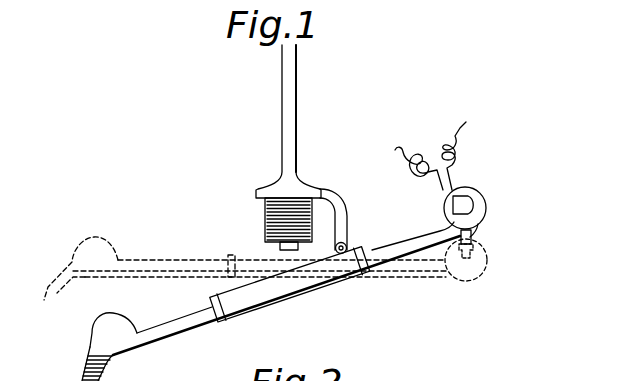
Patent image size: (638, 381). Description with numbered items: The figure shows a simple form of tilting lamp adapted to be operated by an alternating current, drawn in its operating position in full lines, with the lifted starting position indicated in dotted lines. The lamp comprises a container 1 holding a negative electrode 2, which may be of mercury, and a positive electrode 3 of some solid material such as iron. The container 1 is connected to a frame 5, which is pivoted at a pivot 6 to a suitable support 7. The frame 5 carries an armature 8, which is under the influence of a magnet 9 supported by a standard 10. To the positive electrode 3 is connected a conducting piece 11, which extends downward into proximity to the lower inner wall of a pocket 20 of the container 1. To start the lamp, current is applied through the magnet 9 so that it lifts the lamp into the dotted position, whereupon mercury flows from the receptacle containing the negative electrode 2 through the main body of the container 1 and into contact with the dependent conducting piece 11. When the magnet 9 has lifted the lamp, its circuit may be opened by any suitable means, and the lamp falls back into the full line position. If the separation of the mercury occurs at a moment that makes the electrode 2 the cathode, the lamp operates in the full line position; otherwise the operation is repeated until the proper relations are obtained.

The container 1 is at (186, 327).
The negative electrode 2 is at (105, 368).
The positive electrode 3 is at (471, 205).
The frame 5 is at (243, 286).
The pivot 6 is at (346, 250).
The support 7 is at (341, 200).
The armature 8 is at (290, 251).
The magnet 9 is at (265, 207).
The standard 10 is at (297, 88).
The conducting piece 11 is at (472, 216).
The pocket 20 is at (478, 252).